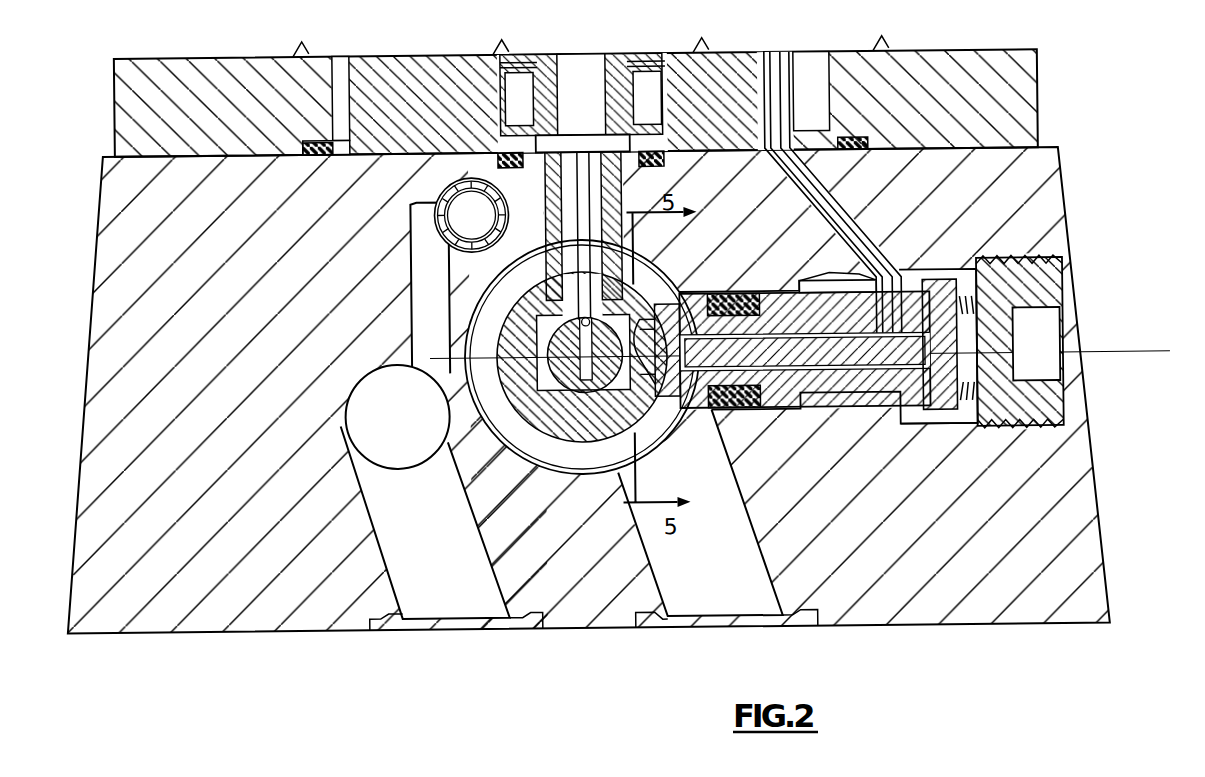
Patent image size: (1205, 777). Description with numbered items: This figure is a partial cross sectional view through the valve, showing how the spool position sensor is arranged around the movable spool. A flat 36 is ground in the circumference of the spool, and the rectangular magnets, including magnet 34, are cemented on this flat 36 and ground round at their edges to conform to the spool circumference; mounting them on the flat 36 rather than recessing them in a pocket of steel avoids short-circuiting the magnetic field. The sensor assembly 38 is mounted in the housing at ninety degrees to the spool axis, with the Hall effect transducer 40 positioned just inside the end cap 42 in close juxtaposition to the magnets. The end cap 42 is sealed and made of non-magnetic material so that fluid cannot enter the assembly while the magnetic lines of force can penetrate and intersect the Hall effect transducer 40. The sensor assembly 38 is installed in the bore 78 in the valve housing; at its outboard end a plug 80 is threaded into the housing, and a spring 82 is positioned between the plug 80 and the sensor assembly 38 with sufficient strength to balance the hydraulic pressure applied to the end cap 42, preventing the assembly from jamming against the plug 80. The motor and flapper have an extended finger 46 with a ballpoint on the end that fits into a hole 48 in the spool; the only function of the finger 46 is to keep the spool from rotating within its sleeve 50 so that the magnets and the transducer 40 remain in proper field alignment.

The magnet 34 is at (657, 439).
The flat 36 is at (560, 463).
The sensor assembly 38 is at (1067, 192).
The Hall effect transducer 40 is at (715, 416).
The end cap 42 is at (662, 301).
The extended finger 46 is at (467, 301).
The hole 48 is at (462, 404).
The sleeve 50 is at (472, 471).
The bore 78 is at (915, 432).
The plug 80 is at (1063, 405).
The spring 82 is at (1013, 355).